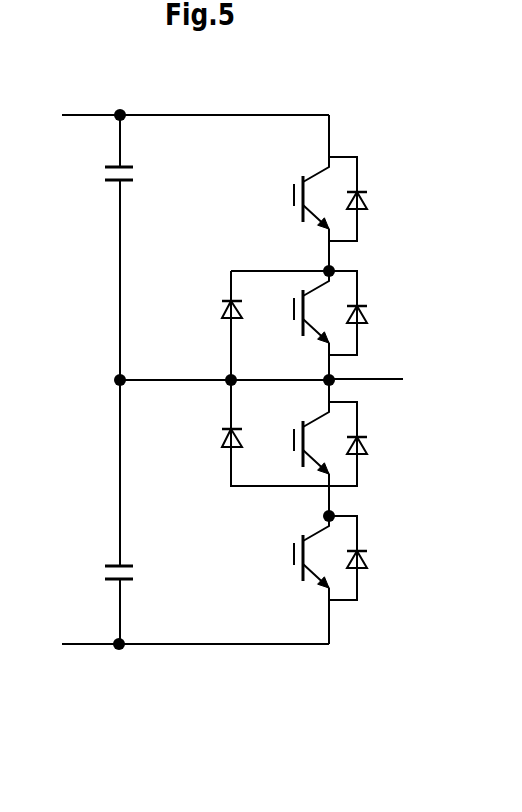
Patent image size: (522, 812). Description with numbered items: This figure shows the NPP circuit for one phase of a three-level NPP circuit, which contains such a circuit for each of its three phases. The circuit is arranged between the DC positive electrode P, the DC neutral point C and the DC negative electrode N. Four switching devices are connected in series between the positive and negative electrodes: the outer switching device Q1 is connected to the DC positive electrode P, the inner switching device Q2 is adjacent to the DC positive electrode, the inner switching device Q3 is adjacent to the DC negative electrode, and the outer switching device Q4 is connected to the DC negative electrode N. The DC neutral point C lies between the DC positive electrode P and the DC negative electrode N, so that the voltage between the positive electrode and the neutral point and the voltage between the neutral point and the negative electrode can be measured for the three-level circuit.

The outer switching device Q1 is at (359, 193).
The inner switching device Q2 is at (359, 325).
The inner switching device Q3 is at (359, 448).
The outer switching device Q4 is at (359, 580).
The DC positive electrode P is at (195, 96).
The DC neutral point C is at (238, 382).
The DC negative electrode N is at (195, 630).